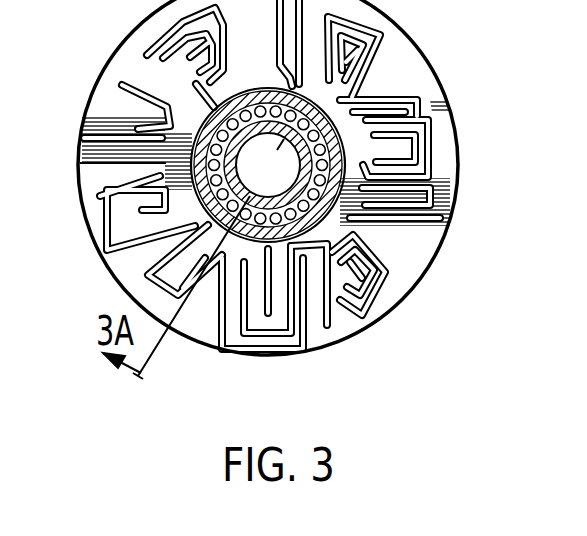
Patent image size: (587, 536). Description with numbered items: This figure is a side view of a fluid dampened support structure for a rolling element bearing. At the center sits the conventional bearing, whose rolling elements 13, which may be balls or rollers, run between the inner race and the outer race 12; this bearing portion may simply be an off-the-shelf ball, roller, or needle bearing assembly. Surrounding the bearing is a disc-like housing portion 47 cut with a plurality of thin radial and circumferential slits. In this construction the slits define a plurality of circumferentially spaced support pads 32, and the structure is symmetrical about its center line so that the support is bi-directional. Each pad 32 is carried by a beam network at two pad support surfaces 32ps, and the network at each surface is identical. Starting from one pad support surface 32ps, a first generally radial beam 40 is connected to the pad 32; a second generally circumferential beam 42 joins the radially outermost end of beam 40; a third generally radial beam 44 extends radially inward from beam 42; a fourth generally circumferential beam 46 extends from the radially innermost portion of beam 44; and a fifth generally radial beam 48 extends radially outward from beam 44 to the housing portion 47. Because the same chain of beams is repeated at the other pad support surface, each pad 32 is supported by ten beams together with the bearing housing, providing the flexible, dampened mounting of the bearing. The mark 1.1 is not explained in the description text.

The axis of rotation 1.1 is at (268, 165).
The outer race 12 is at (222, 140).
The rolling elements 13 is at (216, 136).
The support pads 32 is at (364, 127).
The pad support surfaces 32ps is at (408, 192).
The first radially extending beam 40 is at (451, 194).
The second circumferential beam 42 is at (420, 236).
The third radial beam 44 is at (412, 268).
The fourth circumferential beam 46 is at (380, 283).
The housing portion 47 is at (414, 80).
The fifth radial beam 48 is at (340, 262).